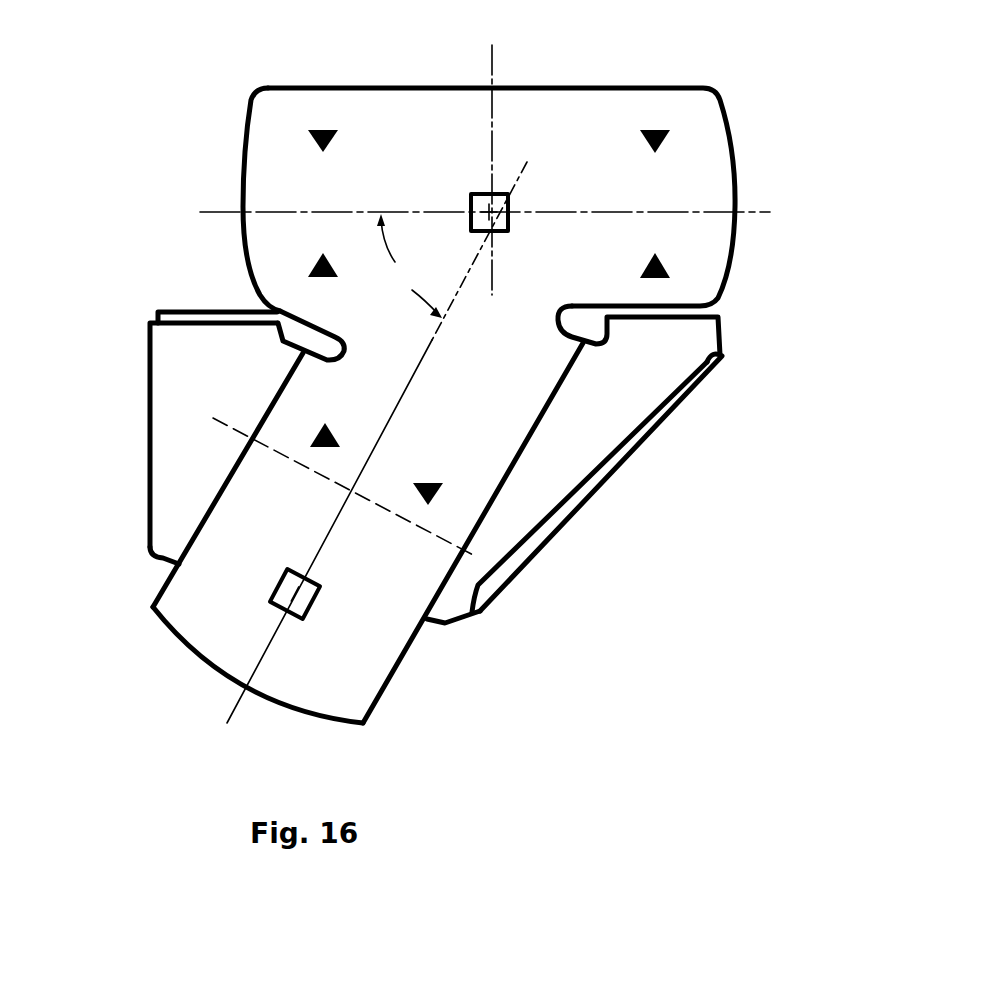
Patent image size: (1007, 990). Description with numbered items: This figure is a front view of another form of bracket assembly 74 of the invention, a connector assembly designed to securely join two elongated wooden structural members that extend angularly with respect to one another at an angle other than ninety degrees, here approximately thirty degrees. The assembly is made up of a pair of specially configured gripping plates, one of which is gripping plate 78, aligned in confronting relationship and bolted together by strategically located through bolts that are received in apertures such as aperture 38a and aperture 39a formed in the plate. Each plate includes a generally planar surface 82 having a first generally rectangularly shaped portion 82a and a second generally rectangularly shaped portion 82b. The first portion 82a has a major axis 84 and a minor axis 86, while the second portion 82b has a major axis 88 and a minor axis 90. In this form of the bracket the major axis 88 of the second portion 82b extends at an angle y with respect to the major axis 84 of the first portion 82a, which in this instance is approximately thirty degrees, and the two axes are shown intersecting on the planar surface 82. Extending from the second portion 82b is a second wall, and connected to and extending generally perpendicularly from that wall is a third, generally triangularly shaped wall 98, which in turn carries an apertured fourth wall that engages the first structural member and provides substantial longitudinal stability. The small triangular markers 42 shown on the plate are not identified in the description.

The bracket assembly 74 is at (760, 182).
The gripping plate 78 is at (592, 84).
The generally planar surface 82 is at (503, 417).
The first generally rectangularly shaped portion 82a is at (392, 154).
The second generally rectangularly shaped portion 82b is at (364, 548).
The major axis 84 is at (227, 212).
The minor axis 86 is at (493, 68).
The major axis 88 is at (233, 718).
The minor axis 90 is at (233, 422).
The third wall 98 is at (177, 457).
The aperture 38a is at (508, 229).
The aperture 39a is at (284, 589).
The triangular marker 42 is at (340, 128).